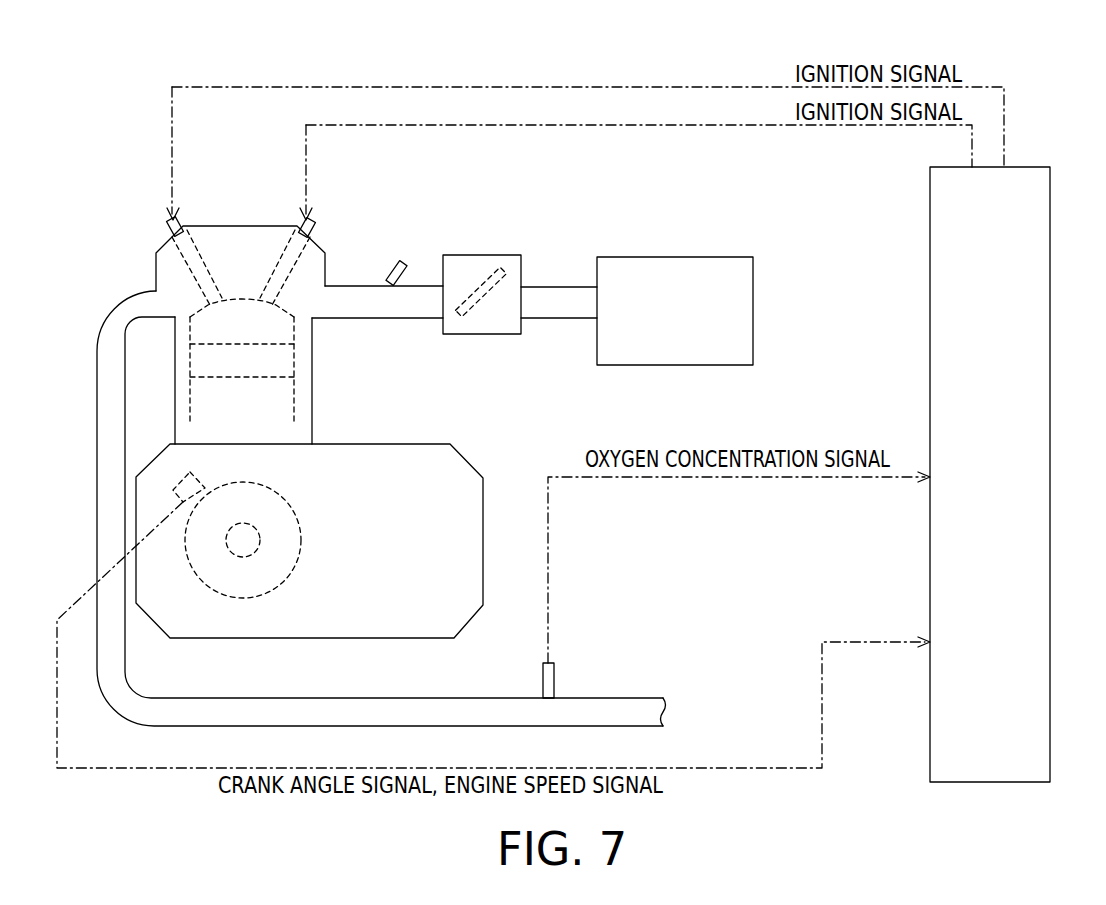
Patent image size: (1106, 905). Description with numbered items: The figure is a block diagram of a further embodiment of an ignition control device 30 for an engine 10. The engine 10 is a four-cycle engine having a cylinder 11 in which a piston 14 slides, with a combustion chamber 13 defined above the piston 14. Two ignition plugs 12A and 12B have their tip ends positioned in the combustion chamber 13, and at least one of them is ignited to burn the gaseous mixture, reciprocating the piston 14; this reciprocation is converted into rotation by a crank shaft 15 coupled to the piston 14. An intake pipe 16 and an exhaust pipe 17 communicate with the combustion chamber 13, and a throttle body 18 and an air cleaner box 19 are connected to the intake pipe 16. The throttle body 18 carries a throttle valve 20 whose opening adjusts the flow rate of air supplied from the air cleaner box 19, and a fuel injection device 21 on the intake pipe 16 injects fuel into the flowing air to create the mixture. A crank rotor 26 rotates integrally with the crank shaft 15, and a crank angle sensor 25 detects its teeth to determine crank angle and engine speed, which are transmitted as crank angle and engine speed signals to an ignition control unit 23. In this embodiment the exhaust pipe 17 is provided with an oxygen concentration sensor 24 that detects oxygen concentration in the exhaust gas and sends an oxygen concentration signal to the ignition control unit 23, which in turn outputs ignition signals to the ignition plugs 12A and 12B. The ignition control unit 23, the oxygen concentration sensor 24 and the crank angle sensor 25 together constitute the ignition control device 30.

The ignition control device 30 is at (587, 72).
The engine 10 is at (240, 215).
The ignition plug 12A is at (168, 230).
The ignition plug 12B is at (314, 229).
The exhaust pipe 17 is at (110, 305).
The combustion chamber 13 is at (205, 327).
The piston 14 is at (193, 367).
The cylinder 11 is at (192, 406).
The crank angle sensor 25 is at (177, 482).
The crank shaft 15 is at (243, 557).
The crank rotor 26 is at (257, 598).
The intake pipe 16 is at (383, 318).
The fuel injection device 21 is at (402, 260).
The throttle body 18 is at (480, 334).
The throttle valve 20 is at (501, 266).
The air cleaner box 19 is at (700, 257).
The ignition control unit 23 is at (1028, 167).
The oxygen concentration sensor 24 is at (555, 673).